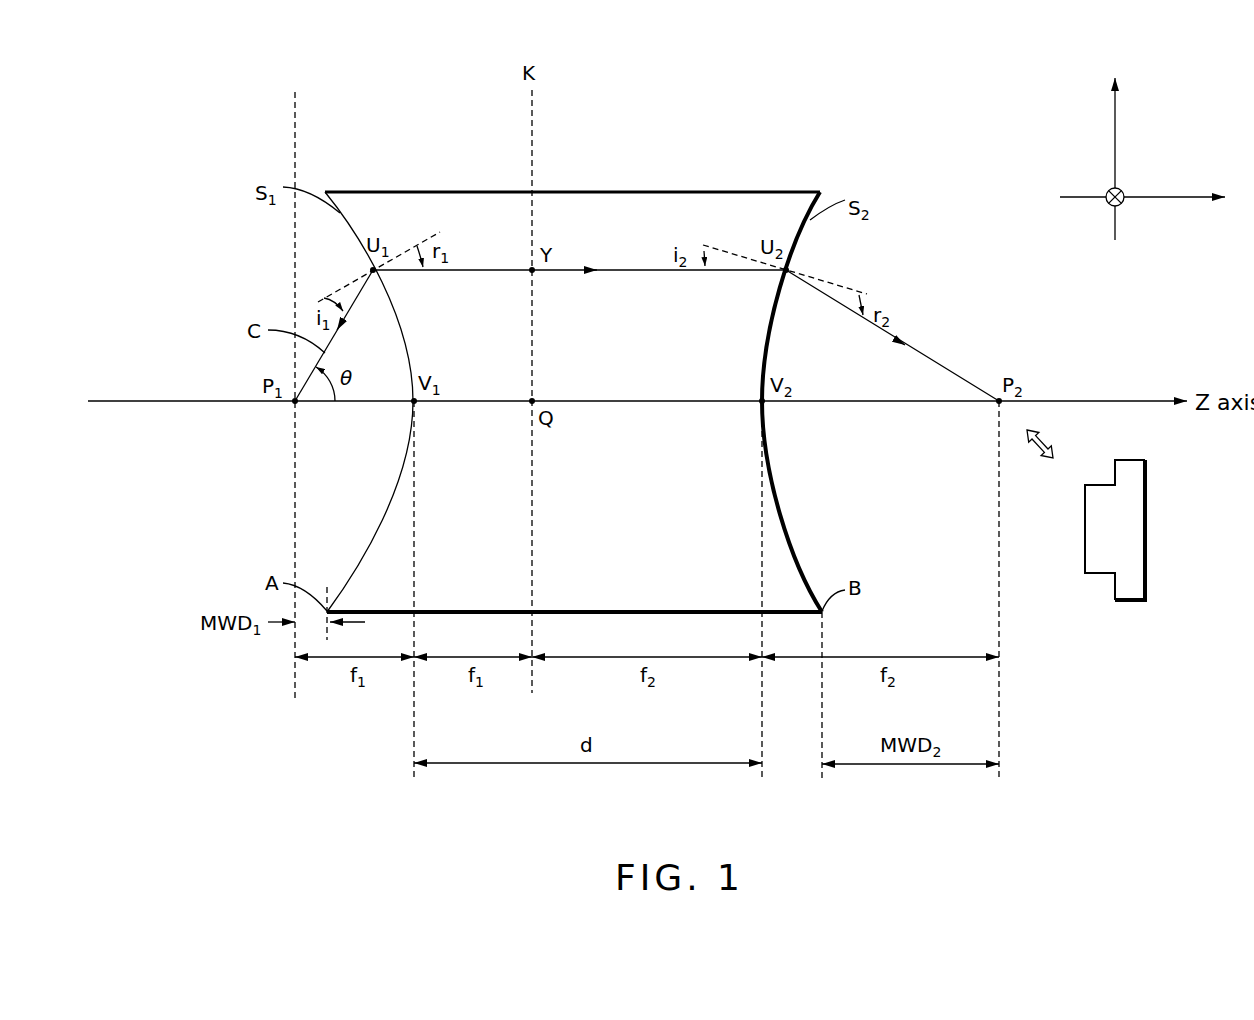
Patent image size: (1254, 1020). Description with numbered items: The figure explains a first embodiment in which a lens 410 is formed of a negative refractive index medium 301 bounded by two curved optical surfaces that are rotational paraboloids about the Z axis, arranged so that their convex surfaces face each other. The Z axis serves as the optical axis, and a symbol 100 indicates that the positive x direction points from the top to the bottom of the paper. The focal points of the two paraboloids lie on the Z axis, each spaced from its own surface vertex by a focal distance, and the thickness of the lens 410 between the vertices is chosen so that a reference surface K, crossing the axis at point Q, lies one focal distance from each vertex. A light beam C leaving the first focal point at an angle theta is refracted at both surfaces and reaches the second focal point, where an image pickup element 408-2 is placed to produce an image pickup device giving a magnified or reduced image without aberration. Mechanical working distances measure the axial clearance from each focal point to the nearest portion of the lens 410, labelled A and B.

The x-axis direction symbol 100 is at (1122, 190).
The negative refractive index medium 301 is at (372, 580).
The lens 410 is at (795, 618).
The image pickup element 408-2 is at (1145, 530).